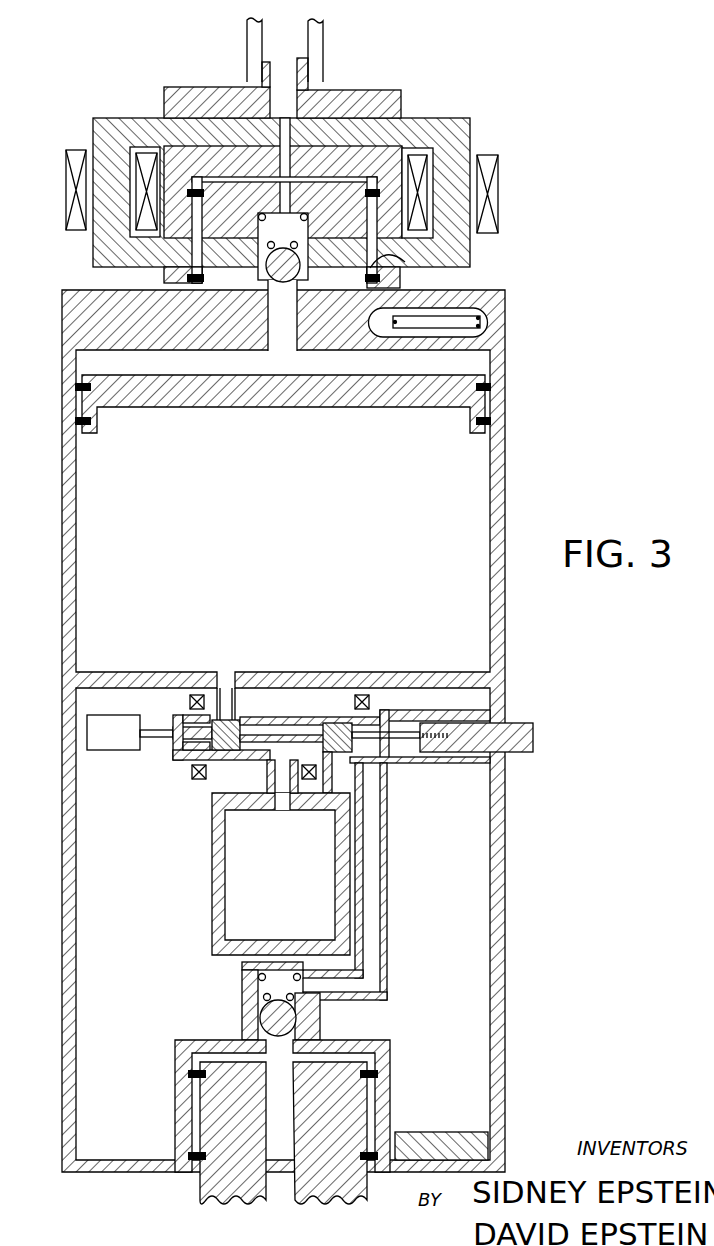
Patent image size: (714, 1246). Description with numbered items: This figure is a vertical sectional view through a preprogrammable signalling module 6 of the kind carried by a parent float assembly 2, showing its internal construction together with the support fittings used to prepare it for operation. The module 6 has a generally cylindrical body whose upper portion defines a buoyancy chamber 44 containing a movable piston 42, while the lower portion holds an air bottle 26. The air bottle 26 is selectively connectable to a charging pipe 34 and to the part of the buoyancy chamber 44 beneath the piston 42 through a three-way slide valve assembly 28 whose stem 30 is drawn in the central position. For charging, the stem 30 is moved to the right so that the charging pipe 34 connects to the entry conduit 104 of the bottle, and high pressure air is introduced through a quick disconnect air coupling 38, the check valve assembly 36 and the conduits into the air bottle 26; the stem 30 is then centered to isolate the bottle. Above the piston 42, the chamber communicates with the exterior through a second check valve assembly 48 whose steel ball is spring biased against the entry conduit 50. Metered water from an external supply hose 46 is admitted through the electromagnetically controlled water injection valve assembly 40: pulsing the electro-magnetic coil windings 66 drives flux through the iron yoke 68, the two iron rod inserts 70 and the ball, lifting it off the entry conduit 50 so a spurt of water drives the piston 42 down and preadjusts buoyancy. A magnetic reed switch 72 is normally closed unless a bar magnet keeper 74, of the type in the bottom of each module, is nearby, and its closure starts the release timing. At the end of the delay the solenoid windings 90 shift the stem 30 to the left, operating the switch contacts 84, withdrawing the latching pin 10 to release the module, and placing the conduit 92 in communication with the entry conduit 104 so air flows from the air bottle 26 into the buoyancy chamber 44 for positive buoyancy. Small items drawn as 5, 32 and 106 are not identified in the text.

The parent float assembly 2 is at (299, 231).
The seal ring 5 is at (265, 231).
The signalling module 6 is at (510, 482).
The latching pin 10 is at (533, 724).
The air bottle 26 is at (212, 951).
The three-way slide valve assembly 28 is at (240, 755).
The stem 30 is at (278, 724).
The valve 32 is at (340, 768).
The charging pipe 34 is at (387, 886).
The check valve assembly 36 is at (242, 963).
The quick disconnect air coupling 38 is at (203, 1202).
The water injection valve assembly 40 is at (172, 76).
The piston 42 is at (163, 408).
The buoyancy chamber 44 is at (283, 540).
The external supply hose 46 is at (247, 23).
The second check valve assembly 48 is at (283, 283).
The entry conduit 50 is at (283, 359).
The electro-magnetic coil windings 66 is at (66, 151).
The iron yoke 68 is at (468, 121).
The iron rod inserts 70 is at (405, 262).
The magnetic reed switch 72 is at (488, 337).
The bar magnet keeper 74 is at (435, 1131).
The switch contacts 84 is at (87, 716).
The solenoid windings 90 is at (192, 775).
The conduit 92 is at (224, 673).
The entry conduit 104 is at (282, 812).
The lower chamber 106 is at (144, 924).